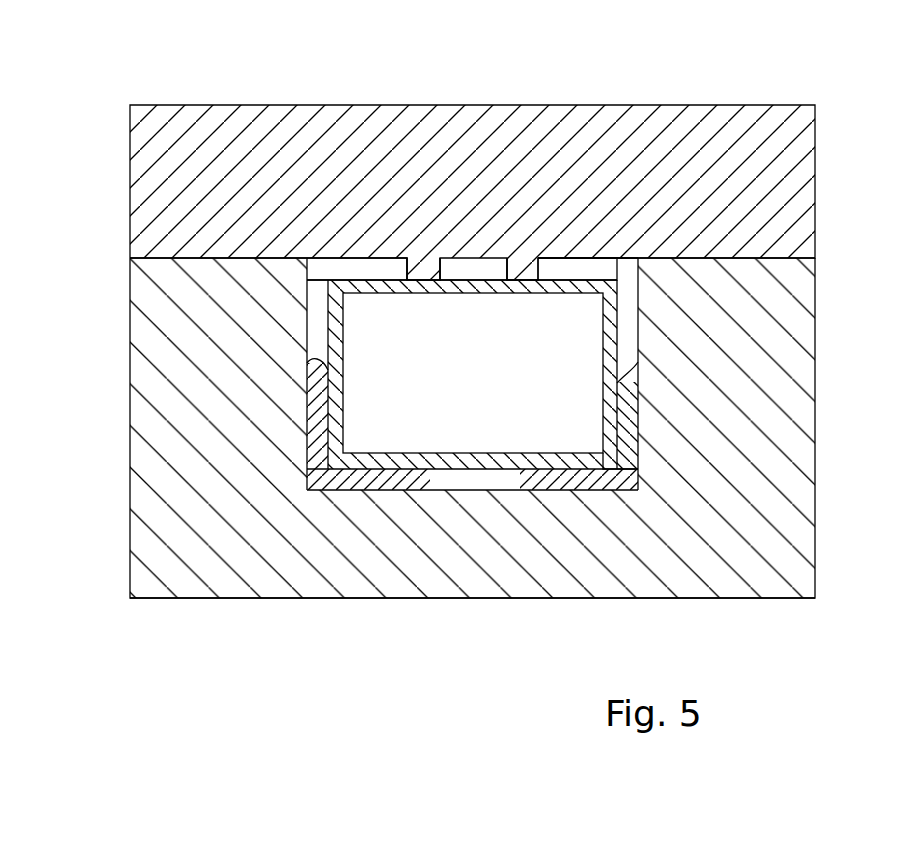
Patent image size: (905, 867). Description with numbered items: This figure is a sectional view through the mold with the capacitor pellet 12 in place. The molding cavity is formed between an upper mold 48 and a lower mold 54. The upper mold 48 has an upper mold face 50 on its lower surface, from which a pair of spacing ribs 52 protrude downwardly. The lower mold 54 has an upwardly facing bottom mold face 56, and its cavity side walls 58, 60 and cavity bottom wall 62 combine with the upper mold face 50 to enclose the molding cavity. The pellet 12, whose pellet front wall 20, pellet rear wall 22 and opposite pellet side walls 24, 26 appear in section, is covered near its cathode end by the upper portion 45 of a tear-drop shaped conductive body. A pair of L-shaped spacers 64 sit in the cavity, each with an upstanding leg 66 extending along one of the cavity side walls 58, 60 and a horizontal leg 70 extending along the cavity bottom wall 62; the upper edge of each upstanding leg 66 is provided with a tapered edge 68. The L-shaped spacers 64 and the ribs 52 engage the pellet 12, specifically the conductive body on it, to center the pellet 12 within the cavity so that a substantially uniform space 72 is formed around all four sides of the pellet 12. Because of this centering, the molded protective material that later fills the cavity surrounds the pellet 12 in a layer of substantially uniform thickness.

The upper mold 48 is at (160, 105).
The lower mold 54 is at (128, 480).
The pellet rear wall 22 is at (337, 502).
The pellet side wall 24 is at (307, 402).
The cavity side wall 60 is at (639, 307).
The L-shaped spacer 64 is at (305, 490).
The cavity side wall 58 is at (307, 273).
The bottom mold face 56 is at (590, 258).
The pellet front wall 20 is at (385, 280).
The upper portion 45 is at (614, 283).
The upper mold face 50 is at (608, 259).
The spacing rib 52 is at (424, 270).
The pellet 12 is at (328, 279).
The space 72 is at (466, 267).
The pellet side wall 26 is at (603, 332).
The cavity bottom wall 62 is at (442, 478).
The upstanding leg 66 is at (307, 435).
The tapered edge 68 is at (307, 363).
The horizontal leg 70 is at (603, 478).